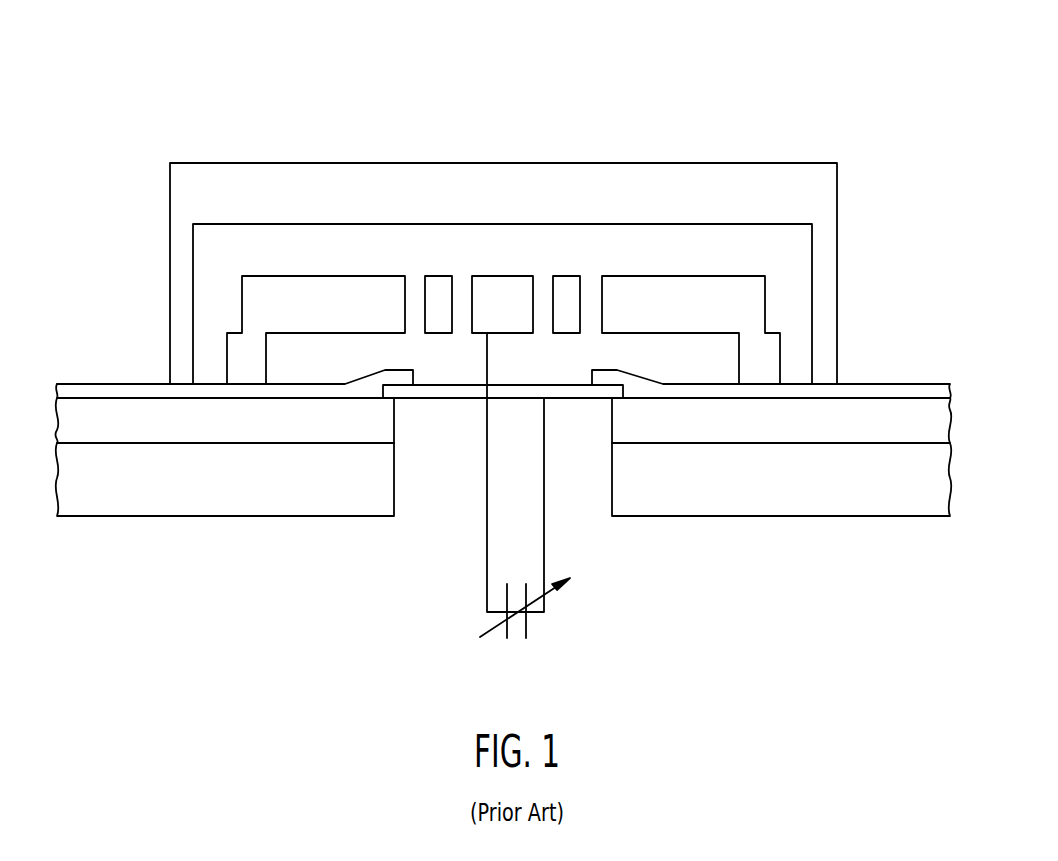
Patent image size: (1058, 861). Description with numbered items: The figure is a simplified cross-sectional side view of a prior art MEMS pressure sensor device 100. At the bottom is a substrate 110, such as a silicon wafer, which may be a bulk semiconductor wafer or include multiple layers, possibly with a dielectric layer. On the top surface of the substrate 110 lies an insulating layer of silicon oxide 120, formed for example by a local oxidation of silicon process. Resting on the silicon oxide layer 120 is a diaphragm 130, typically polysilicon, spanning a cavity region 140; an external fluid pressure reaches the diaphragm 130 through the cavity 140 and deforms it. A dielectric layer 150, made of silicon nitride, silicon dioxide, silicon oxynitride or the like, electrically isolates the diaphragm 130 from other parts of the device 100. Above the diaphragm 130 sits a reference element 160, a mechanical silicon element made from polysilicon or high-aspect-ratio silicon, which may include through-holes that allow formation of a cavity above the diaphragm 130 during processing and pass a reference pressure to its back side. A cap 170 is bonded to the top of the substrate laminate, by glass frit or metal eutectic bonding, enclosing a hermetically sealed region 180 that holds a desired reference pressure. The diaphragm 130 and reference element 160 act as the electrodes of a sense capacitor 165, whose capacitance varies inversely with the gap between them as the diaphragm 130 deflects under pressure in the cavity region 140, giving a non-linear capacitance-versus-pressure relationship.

The MEMS pressure sensor device 100 is at (868, 38).
The substrate 110 is at (811, 487).
The insulating layer of silicon oxide 120 is at (847, 432).
The diaphragm 130 is at (439, 393).
The cavity region 140 is at (580, 504).
The dielectric layer 150 is at (898, 385).
The reference element 160 is at (708, 317).
The sense capacitor 165 is at (537, 630).
The cap 170 is at (770, 170).
The hermetically sealed region 180 is at (355, 252).